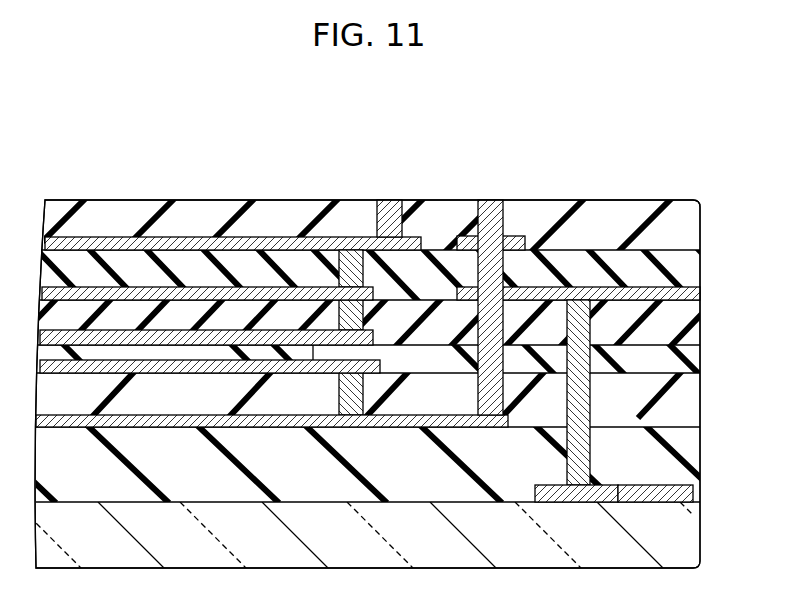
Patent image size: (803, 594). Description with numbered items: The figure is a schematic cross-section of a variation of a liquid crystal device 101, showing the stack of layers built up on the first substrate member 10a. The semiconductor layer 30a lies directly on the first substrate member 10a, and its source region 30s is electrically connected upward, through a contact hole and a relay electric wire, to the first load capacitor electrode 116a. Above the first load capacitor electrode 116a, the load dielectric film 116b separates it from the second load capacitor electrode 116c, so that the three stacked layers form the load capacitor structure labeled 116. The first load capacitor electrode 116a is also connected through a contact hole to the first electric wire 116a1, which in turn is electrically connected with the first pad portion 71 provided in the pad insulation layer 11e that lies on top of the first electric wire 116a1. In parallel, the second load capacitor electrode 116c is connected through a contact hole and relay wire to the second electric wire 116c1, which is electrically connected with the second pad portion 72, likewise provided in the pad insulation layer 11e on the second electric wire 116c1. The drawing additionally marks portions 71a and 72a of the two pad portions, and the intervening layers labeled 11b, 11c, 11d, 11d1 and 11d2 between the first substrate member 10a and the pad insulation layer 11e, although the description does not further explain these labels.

The liquid crystal device 101 is at (643, 122).
The capacitor 116 is at (368, 263).
The first load capacitor electrode 116a is at (368, 273).
The load dielectric film 116b is at (227, 357).
The second load capacitor electrode 116c is at (233, 257).
The second electric wire 116c1 is at (346, 236).
The first electric wire 116a1 is at (536, 236).
The second pad portion 72 is at (390, 190).
The via conductor end portion 72a is at (389, 200).
The first pad portion 71 is at (488, 279).
The via conductor end portion 71a is at (490, 200).
The pad insulation layer 11e is at (693, 227).
The insulating layer 11d2 is at (693, 268).
The insulating layer 11d1 is at (692, 312).
The insulating layer 11d is at (692, 346).
The insulating layer 11c is at (688, 396).
The insulating layer 11b is at (683, 455).
The first substrate member 10a is at (683, 533).
The source region 30s is at (567, 502).
The semiconductor layer 30a is at (650, 502).